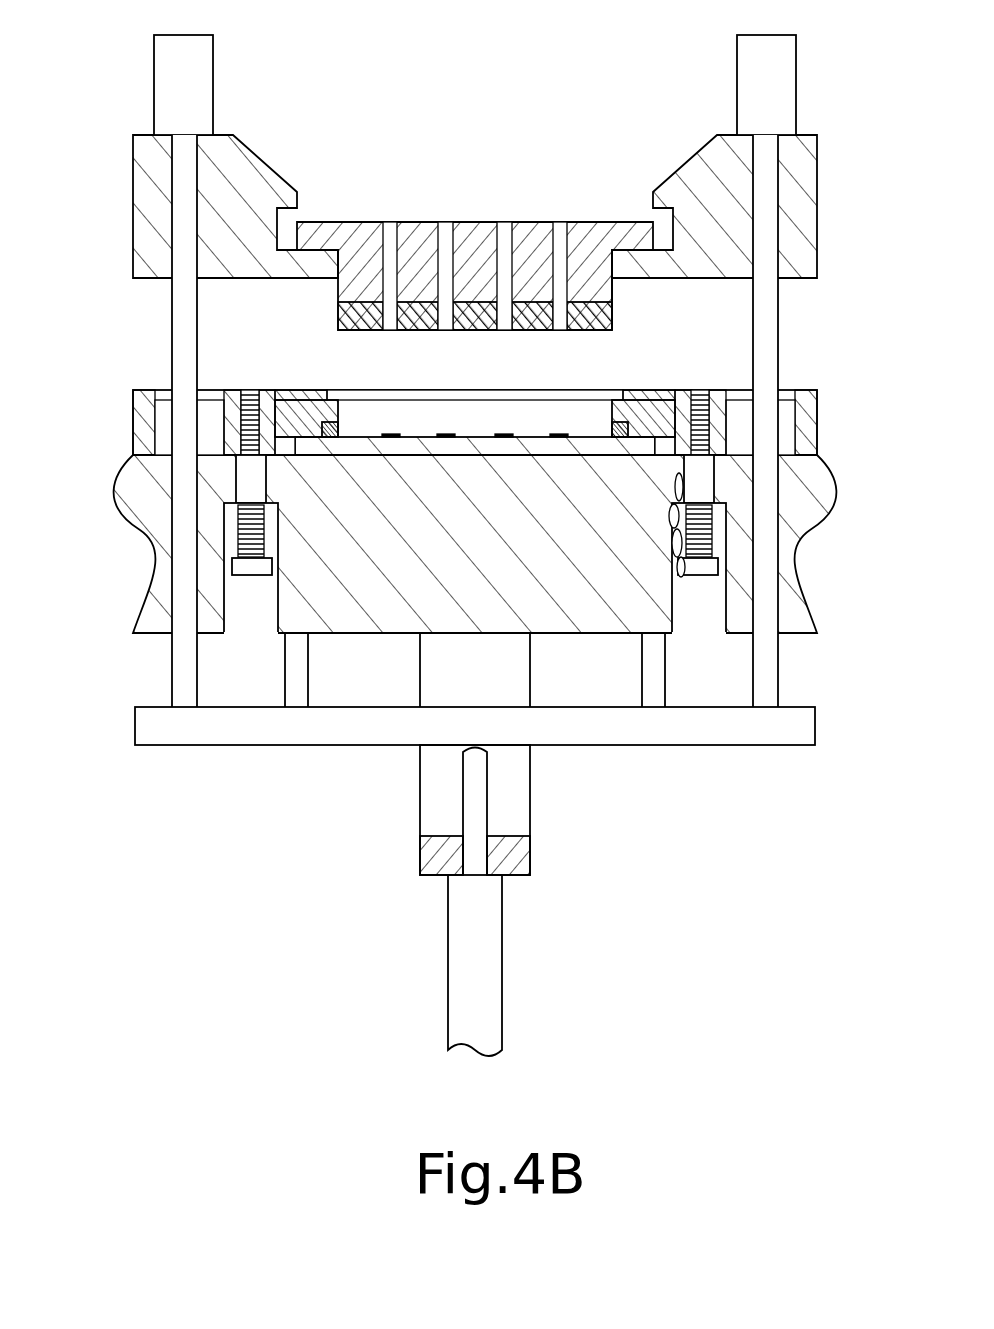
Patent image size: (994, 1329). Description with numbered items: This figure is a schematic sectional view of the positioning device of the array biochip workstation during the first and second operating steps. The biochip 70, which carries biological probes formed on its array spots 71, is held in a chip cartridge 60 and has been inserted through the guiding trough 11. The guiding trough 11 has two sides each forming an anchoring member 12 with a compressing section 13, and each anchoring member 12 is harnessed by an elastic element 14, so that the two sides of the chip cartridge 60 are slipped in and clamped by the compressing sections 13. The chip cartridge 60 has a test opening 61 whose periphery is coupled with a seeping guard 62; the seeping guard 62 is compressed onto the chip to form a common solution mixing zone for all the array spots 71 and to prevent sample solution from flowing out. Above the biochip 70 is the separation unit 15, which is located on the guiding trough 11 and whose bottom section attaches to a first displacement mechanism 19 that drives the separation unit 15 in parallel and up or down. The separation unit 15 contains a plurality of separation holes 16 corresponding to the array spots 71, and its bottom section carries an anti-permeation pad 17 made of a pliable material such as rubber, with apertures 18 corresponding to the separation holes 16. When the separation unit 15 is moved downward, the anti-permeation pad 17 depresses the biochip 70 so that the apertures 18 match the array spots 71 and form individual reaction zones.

The guiding trough 11 is at (808, 418).
The anchoring member 12 is at (692, 386).
The compressing section 13 is at (314, 398).
The elastic element 14 is at (712, 528).
The separation unit 15 is at (133, 192).
The separation holes 16 is at (514, 233).
The anti-permeation pad 17 is at (613, 322).
The apertures 18 is at (558, 331).
The first displacement mechanism 19 is at (473, 950).
The chip cartridge 60 is at (333, 456).
The test opening 61 is at (338, 415).
The seeping guard 62 is at (326, 433).
The biochip 70 is at (538, 437).
The array spots 71 is at (445, 432).